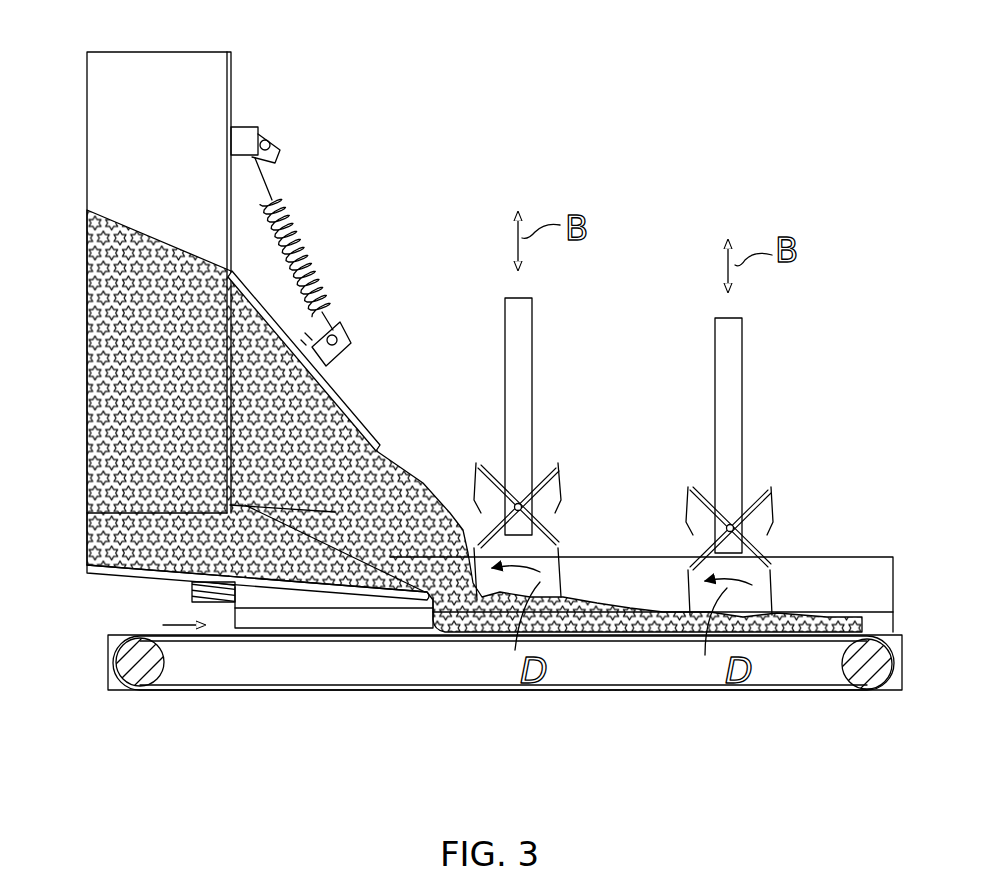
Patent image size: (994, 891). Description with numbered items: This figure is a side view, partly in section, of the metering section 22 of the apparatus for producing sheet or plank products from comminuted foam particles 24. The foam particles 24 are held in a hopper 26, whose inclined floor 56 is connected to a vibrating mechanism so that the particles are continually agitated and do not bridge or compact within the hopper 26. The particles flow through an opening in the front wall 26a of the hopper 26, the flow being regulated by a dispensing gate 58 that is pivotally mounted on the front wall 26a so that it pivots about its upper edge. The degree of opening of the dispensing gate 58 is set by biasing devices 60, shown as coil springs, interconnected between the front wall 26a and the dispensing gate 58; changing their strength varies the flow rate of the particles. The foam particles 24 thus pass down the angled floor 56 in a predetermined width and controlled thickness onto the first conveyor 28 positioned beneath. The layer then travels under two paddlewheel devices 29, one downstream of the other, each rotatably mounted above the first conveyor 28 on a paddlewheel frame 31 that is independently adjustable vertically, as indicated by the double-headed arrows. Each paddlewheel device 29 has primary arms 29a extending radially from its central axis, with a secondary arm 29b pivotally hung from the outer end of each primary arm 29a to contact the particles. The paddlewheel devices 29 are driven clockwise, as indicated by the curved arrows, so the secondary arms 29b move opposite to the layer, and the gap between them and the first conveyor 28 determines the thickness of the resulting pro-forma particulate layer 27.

The metering section 22 is at (694, 140).
The foam particles 24 is at (150, 240).
The hopper 26 is at (238, 74).
The front wall 26a is at (235, 115).
The pro-forma particulate layer 27 is at (820, 615).
The first conveyor 28 is at (150, 638).
The paddlewheel device 29 is at (673, 435).
The primary arm 29a is at (490, 470).
The secondary arm 29b is at (683, 520).
The paddlewheel frame 31 is at (512, 333).
The inclined floor 56 is at (280, 585).
The dispensing gate 58 is at (335, 400).
The biasing device 60 is at (310, 224).